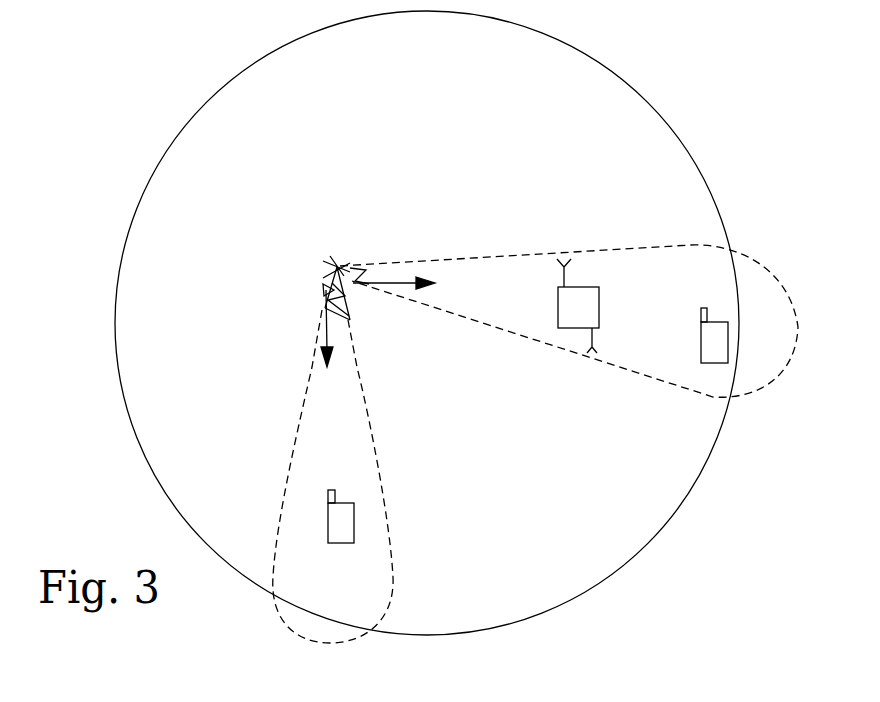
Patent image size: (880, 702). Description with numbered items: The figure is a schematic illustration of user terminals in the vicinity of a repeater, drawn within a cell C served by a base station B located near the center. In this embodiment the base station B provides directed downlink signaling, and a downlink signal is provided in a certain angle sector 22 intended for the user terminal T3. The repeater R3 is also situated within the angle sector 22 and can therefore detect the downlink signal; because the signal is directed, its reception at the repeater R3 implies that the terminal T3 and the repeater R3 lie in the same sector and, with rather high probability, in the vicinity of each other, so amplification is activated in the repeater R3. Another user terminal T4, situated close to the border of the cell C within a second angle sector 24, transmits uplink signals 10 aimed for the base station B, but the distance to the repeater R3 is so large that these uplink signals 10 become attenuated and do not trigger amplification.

The cell C is at (165, 185).
The base station B is at (338, 266).
The uplink signals 10 is at (350, 268).
The angle sector 22 is at (498, 256).
The angle sector 24 is at (290, 460).
The repeater R3 is at (588, 316).
The user terminal T3 is at (722, 333).
The user terminal T4 is at (342, 530).